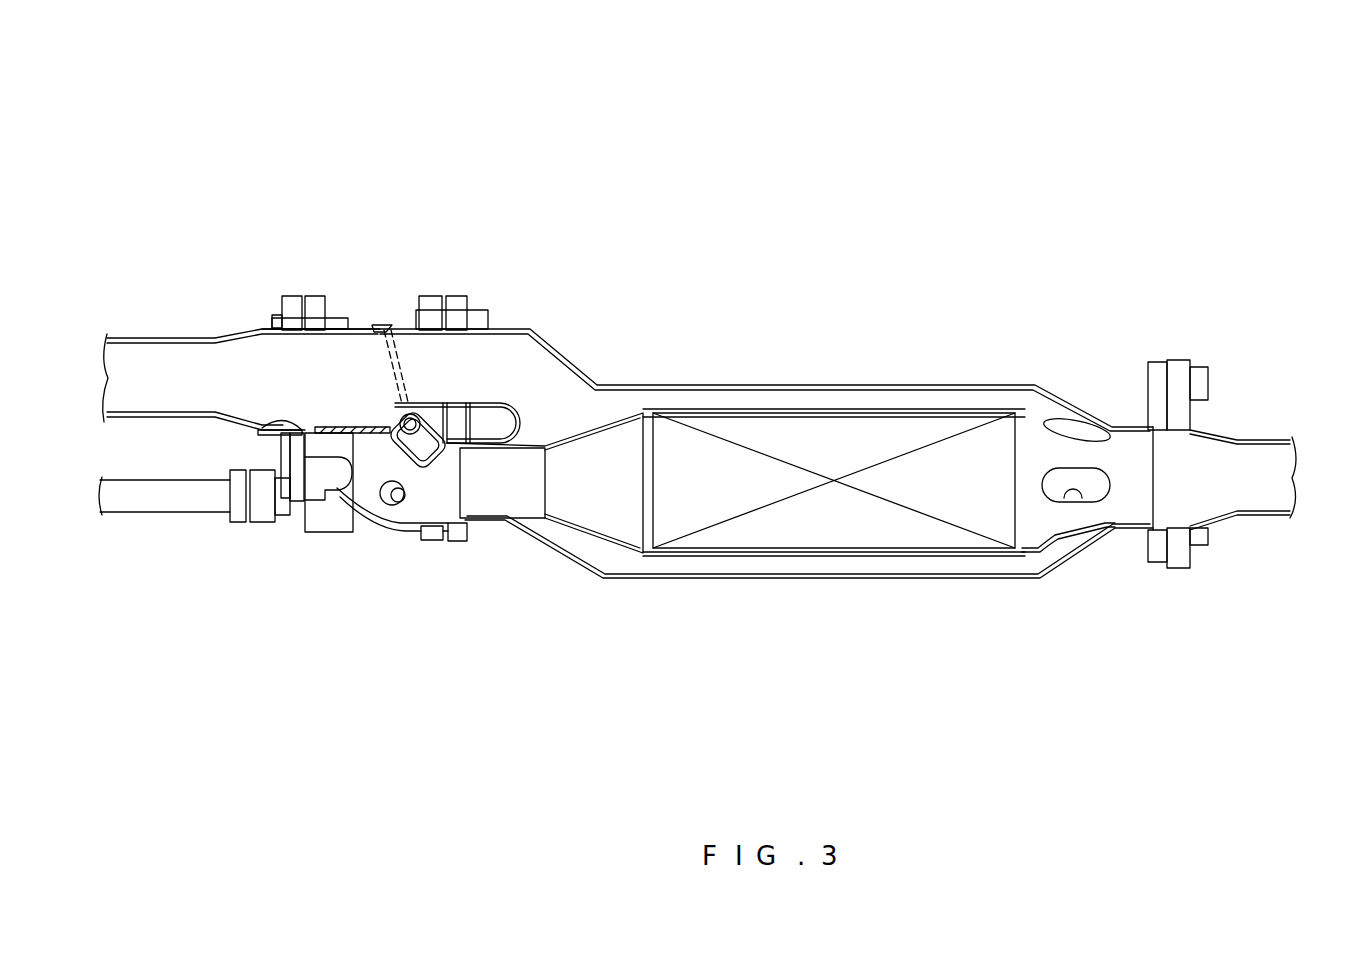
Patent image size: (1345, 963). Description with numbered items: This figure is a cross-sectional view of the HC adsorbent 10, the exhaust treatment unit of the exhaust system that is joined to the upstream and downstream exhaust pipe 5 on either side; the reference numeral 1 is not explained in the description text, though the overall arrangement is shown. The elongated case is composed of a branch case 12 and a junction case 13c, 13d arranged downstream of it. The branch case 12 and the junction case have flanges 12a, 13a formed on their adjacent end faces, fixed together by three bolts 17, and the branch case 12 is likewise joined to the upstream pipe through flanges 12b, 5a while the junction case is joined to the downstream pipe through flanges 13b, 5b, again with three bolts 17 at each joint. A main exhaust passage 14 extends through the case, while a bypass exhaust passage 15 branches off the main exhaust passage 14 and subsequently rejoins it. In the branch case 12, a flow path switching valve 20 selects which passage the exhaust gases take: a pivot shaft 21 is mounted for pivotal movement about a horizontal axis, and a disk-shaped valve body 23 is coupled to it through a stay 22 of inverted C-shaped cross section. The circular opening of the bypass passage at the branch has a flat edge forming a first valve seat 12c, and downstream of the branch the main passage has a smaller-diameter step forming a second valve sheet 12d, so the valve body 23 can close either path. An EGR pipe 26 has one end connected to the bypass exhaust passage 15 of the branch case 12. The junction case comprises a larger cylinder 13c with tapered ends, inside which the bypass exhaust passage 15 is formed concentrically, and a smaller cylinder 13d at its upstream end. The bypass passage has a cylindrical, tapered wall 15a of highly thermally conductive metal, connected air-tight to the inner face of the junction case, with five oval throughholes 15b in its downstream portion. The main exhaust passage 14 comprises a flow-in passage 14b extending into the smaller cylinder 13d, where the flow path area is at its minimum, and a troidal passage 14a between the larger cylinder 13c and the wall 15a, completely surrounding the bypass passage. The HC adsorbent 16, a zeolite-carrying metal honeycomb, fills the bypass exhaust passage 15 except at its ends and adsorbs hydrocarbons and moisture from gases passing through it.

The exhaust system 1 is at (677, 100).
The HC adsorbent 10 is at (793, 207).
The exhaust pipe 5 is at (160, 338).
The flange 5a is at (291, 296).
The flange 5b is at (1178, 360).
The branch case 12 is at (430, 524).
The flange 12a is at (430, 296).
The flange 12b is at (317, 296).
The first valve seat 12c is at (290, 420).
The second valve sheet 12d is at (380, 324).
The flange 13a is at (457, 296).
The flange 13b is at (1156, 364).
The larger cylinder 13c is at (715, 383).
The smaller cylinder 13d is at (530, 329).
The main exhaust passage 14 is at (791, 474).
The troidal passage 14a is at (752, 400).
The flow-in passage 14b is at (503, 380).
The bypass exhaust passage 15 is at (468, 490).
The wall 15a is at (795, 553).
The oval throughholes 15b is at (1062, 427).
The HC adsorbent 16 is at (880, 525).
The bolts 17 is at (272, 318).
The flow path switching valve 20 is at (387, 458).
The pivot shaft 21 is at (418, 410).
The stay 22 is at (456, 522).
The valve body 23 is at (365, 427).
The EGR pipe 26 is at (135, 512).